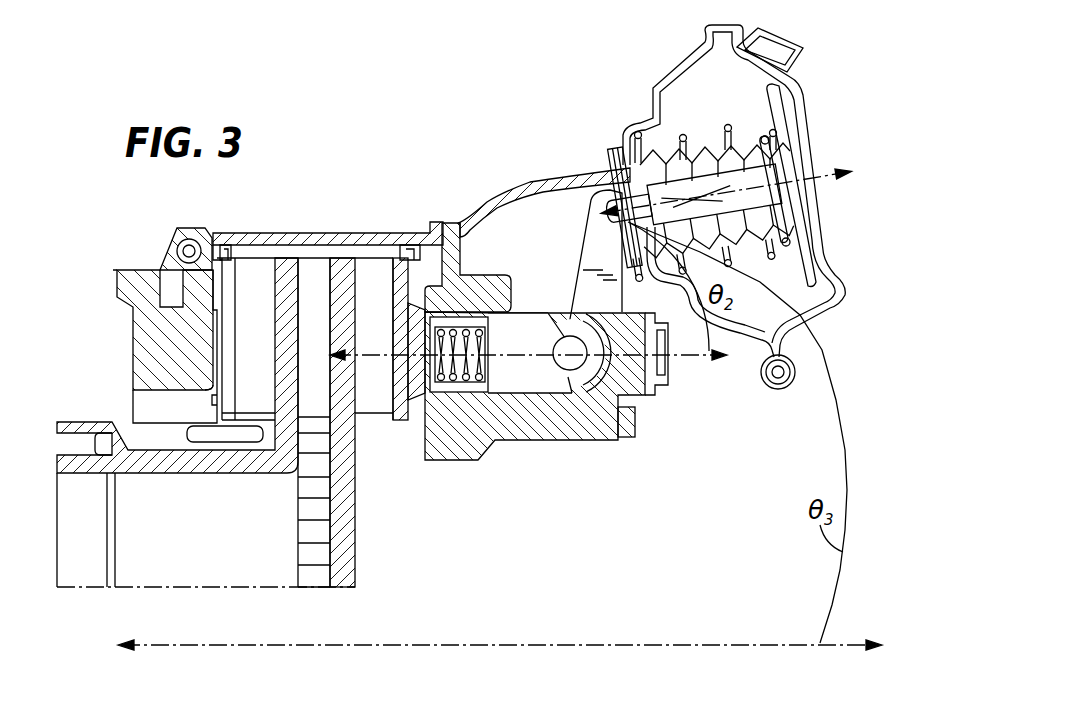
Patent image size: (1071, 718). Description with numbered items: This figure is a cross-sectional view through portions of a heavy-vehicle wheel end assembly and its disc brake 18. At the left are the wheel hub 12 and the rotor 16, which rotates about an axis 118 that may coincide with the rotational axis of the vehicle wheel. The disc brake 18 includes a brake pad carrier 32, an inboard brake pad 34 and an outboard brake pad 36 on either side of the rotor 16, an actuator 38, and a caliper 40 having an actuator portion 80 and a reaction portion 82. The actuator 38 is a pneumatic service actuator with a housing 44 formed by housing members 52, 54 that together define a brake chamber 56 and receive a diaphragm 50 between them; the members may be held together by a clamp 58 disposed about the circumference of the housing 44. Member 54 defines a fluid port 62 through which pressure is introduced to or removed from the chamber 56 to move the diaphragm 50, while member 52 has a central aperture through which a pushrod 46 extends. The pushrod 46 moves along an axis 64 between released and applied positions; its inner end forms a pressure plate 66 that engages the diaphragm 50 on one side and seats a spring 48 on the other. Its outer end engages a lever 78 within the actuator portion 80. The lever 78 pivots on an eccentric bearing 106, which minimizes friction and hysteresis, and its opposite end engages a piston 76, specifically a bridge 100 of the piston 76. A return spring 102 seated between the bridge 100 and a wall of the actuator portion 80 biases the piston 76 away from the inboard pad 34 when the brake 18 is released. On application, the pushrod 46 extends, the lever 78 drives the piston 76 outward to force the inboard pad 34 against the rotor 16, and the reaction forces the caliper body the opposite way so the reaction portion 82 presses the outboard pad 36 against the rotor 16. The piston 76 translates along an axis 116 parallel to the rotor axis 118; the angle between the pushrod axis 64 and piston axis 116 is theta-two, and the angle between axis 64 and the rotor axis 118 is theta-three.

The wheel hub 12 is at (140, 557).
The rotor 16 is at (338, 541).
The disc brake 18 is at (350, 182).
The brake pad carrier 32 is at (213, 437).
The inboard brake pad 34 is at (372, 270).
The outboard brake pad 36 is at (256, 270).
The actuator 38 is at (834, 340).
The caliper 40 is at (466, 190).
The housing 44 is at (652, 64).
The pushrod 46 is at (738, 185).
The spring 48 is at (820, 257).
The diaphragm 50 is at (828, 300).
The housing member 52 is at (655, 98).
The housing member 54 is at (835, 200).
The brake chamber 56 is at (725, 88).
The clamp 58 is at (795, 378).
The fluid port 62 is at (783, 47).
The axis 64 is at (834, 168).
The pressure plate 66 is at (792, 160).
The piston 76 is at (545, 377).
The lever 78 is at (593, 243).
The actuator portion 80 is at (547, 180).
The reaction portion 82 is at (162, 268).
The bridge 100 is at (522, 387).
The return spring 102 is at (459, 392).
The eccentric bearing 106 is at (617, 403).
The translational axis of piston 116 is at (692, 352).
The rotor axis 118 is at (227, 642).